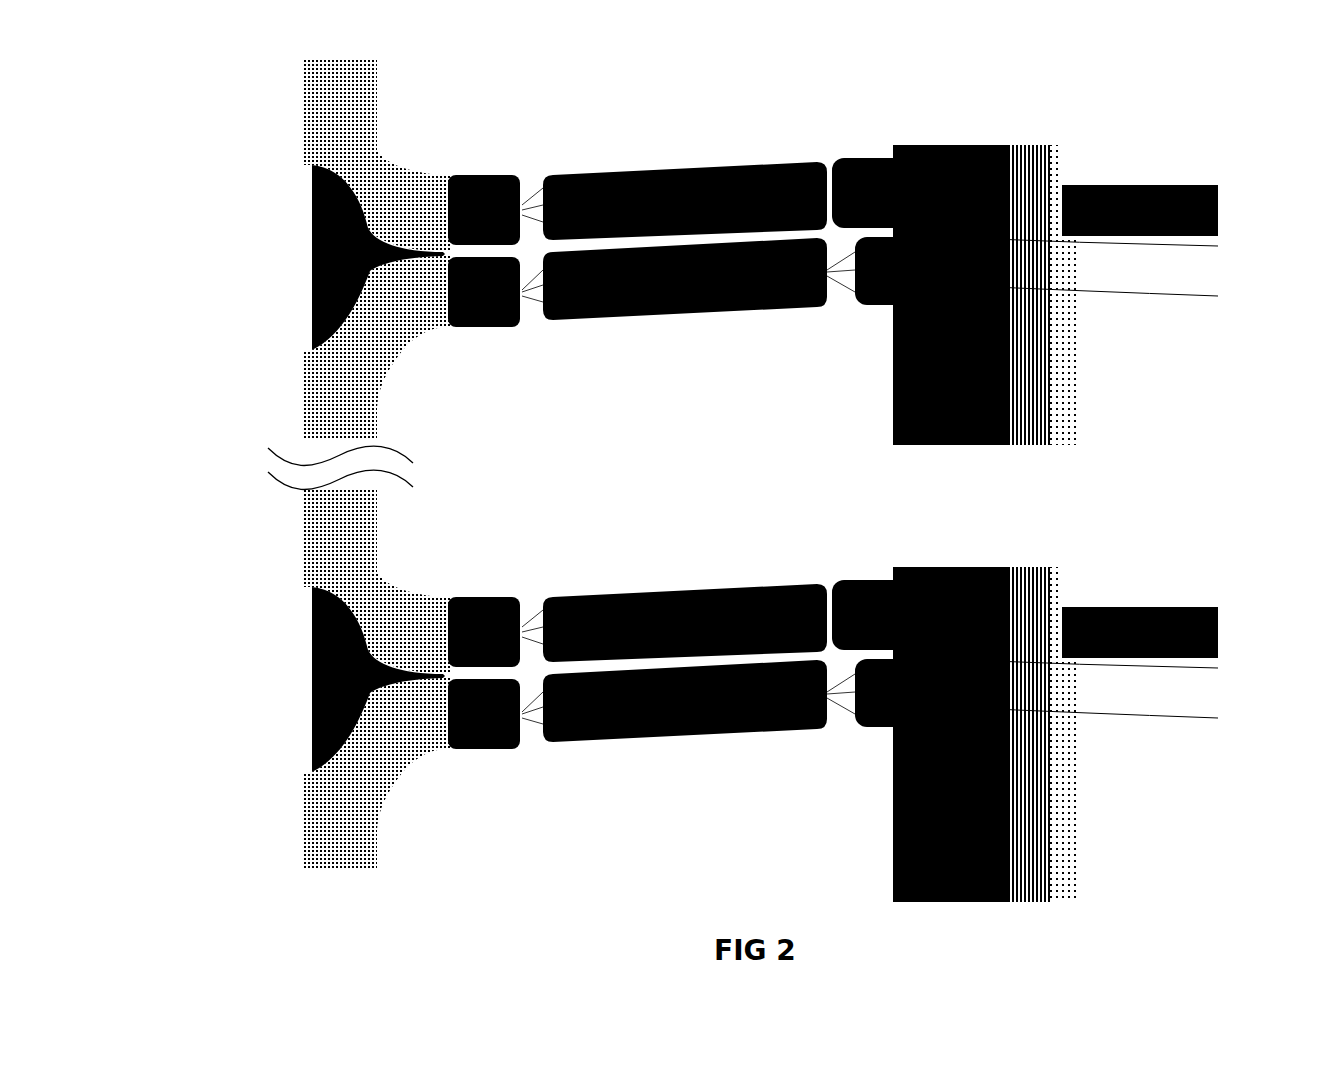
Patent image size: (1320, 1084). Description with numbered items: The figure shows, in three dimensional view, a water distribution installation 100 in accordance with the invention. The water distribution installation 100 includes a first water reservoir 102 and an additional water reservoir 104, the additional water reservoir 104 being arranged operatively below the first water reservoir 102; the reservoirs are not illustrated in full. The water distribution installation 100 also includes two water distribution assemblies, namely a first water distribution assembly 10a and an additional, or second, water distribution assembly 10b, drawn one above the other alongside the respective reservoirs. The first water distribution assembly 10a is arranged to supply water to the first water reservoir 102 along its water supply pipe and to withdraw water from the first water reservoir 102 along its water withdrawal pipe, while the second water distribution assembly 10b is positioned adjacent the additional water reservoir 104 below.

The water distribution installation 100 is at (208, 115).
The first water distribution assembly 10a is at (460, 120).
The second water distribution assembly 10b is at (593, 671).
The first water reservoir 102 is at (1192, 164).
The additional water reservoir 104 is at (1094, 706).